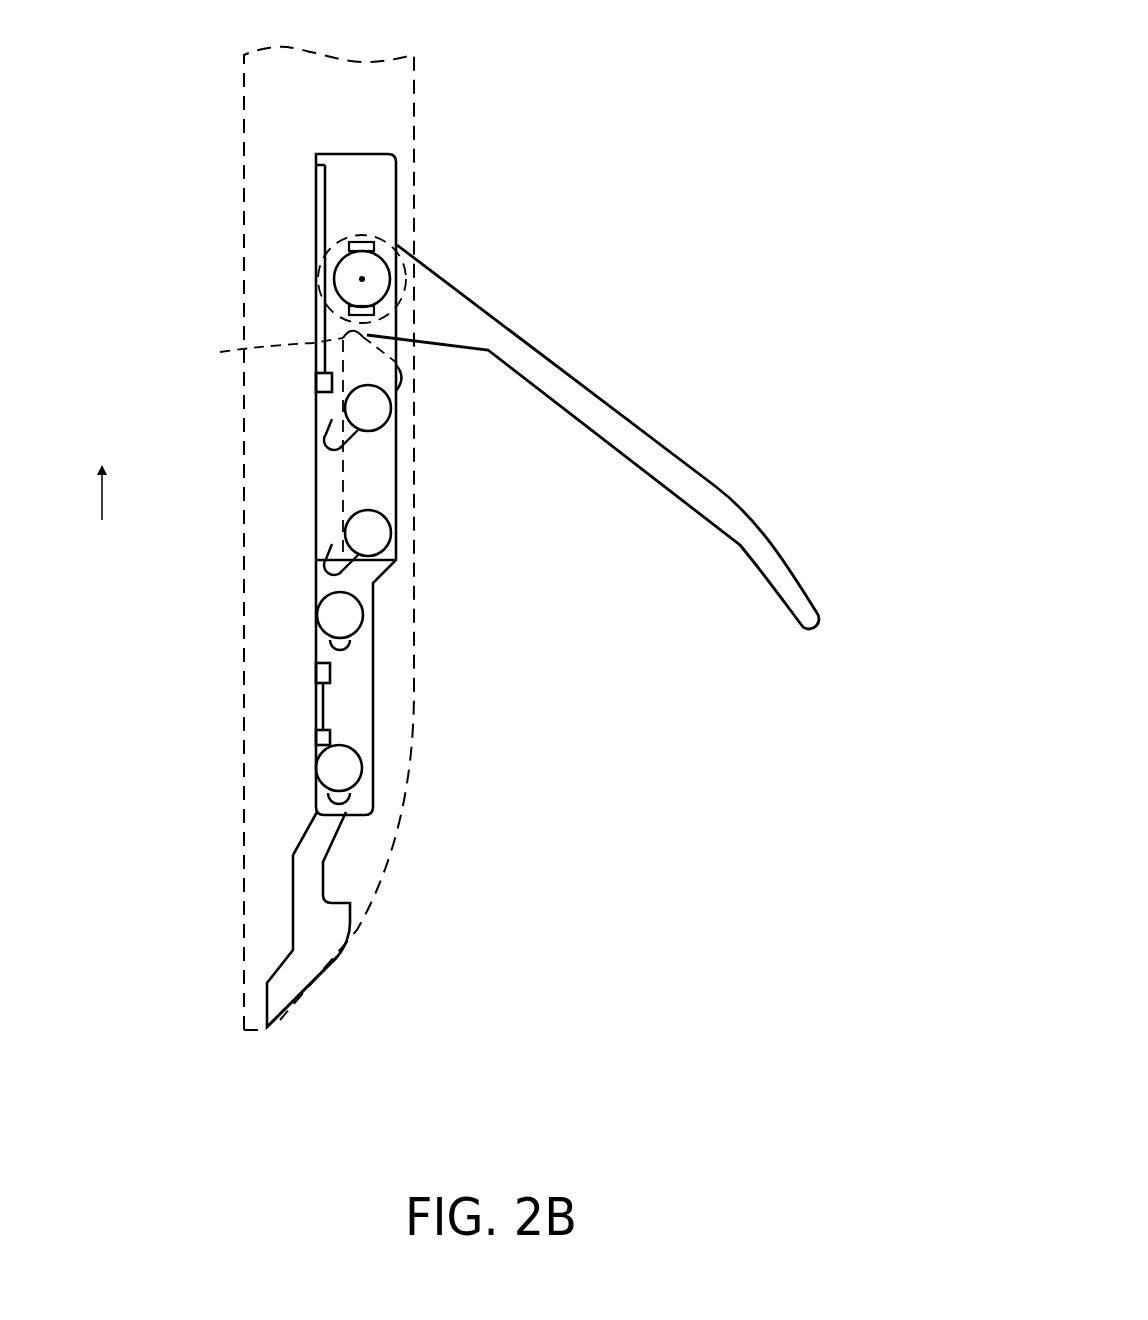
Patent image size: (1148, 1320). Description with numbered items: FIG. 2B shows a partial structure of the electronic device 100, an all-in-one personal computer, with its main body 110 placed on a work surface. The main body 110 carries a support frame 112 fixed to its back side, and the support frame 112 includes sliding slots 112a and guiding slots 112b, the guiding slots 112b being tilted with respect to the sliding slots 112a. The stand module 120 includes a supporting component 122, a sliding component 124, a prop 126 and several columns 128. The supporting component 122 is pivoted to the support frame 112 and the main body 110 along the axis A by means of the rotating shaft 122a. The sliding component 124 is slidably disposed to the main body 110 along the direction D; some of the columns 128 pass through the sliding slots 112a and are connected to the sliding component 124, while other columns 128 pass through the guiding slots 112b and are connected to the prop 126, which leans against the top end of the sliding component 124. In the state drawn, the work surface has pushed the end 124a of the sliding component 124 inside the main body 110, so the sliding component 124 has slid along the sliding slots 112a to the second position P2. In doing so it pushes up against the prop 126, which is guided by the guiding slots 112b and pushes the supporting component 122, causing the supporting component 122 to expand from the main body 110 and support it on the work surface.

The electronic device 100 is at (880, 52).
The main body 110 is at (221, 94).
The support frame 112 is at (360, 693).
The sliding slot 112a is at (326, 798).
The guiding slot 112b is at (332, 548).
The stand module 120 is at (484, 656).
The supporting component 122 is at (663, 463).
The rotating shaft 122a is at (377, 262).
The sliding component 124 is at (303, 920).
The end 124a is at (278, 1003).
The prop 126 is at (287, 445).
The column 128 is at (345, 767).
The axis A is at (362, 279).
The second position P2 is at (278, 950).
The direction D is at (101, 514).